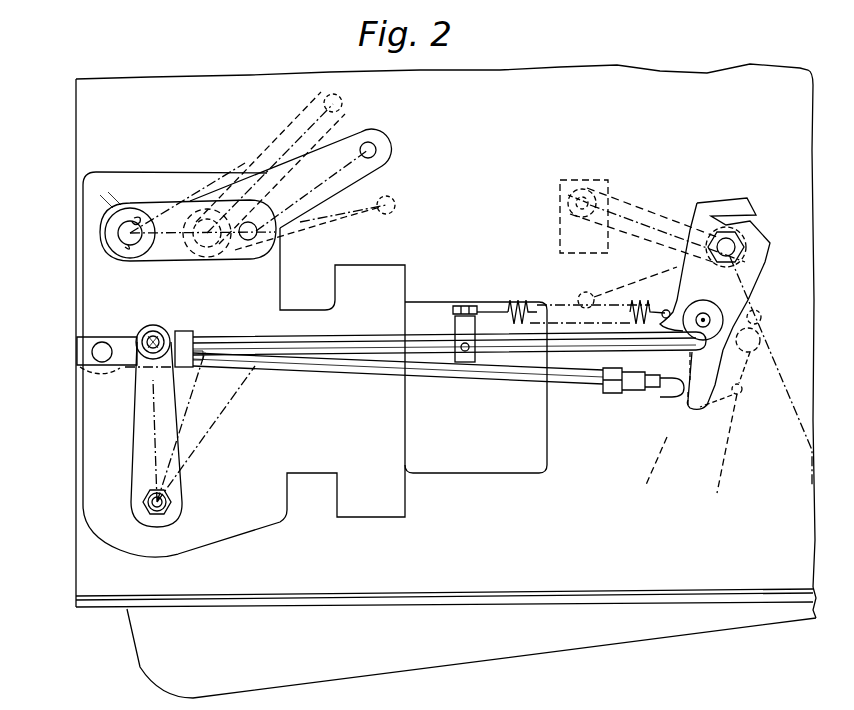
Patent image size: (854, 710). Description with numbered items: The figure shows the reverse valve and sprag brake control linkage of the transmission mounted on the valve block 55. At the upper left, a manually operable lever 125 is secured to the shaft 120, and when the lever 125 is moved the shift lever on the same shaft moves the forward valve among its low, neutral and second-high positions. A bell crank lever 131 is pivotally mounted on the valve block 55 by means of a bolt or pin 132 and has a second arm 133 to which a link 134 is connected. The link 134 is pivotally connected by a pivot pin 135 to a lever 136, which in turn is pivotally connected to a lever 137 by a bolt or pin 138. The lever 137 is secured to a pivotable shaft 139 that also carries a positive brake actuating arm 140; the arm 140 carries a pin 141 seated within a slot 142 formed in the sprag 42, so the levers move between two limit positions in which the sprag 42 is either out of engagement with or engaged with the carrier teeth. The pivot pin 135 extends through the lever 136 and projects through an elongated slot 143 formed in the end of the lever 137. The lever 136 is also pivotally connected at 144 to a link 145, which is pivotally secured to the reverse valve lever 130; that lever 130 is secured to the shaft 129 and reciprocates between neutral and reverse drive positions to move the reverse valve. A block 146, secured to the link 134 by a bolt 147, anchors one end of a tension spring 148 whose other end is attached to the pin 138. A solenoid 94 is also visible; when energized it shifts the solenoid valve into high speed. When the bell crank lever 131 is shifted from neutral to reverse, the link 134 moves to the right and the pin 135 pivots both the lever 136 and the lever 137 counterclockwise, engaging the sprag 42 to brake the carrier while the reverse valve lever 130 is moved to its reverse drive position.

The sprag 42 is at (560, 233).
The valve block 55 is at (116, 172).
The solenoid 94 is at (481, 483).
The shaft 120 is at (213, 258).
The manually operable lever 125 is at (378, 137).
The shaft 129 is at (165, 507).
The reverse valve lever 130 is at (137, 449).
The bell crank lever 131 is at (268, 245).
The bolt or pin 132 is at (132, 221).
The second arm 133 is at (95, 292).
The link 134 is at (358, 340).
The pivot pin 135 is at (702, 352).
The lever 136 is at (670, 398).
The lever 137 is at (752, 275).
The bolt or pin 138 is at (703, 312).
The pivotable shaft 139 is at (738, 240).
The positive brake actuating arm 140 is at (633, 198).
The pin 141 is at (583, 190).
The slot 142 is at (566, 196).
The elongated slot 143 is at (666, 310).
The pivotal connection 144 is at (699, 428).
The link 145 is at (522, 378).
The block 146 is at (454, 324).
The bolt 147 is at (466, 305).
The tension spring 148 is at (522, 302).